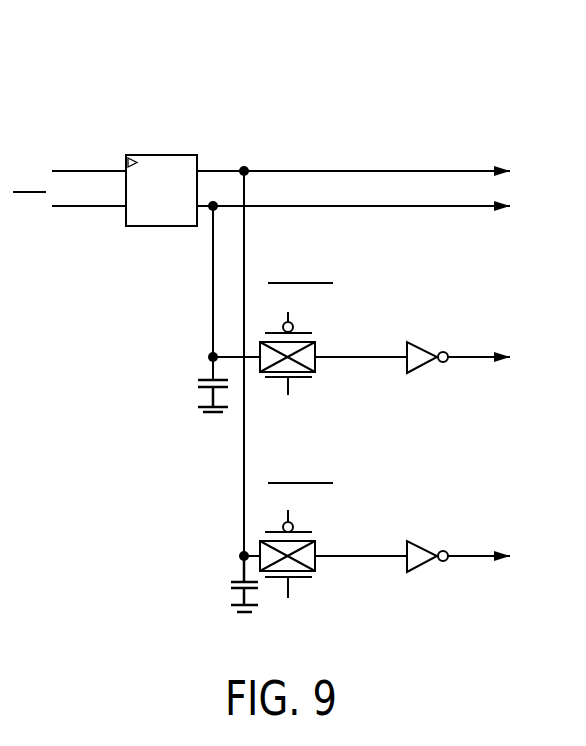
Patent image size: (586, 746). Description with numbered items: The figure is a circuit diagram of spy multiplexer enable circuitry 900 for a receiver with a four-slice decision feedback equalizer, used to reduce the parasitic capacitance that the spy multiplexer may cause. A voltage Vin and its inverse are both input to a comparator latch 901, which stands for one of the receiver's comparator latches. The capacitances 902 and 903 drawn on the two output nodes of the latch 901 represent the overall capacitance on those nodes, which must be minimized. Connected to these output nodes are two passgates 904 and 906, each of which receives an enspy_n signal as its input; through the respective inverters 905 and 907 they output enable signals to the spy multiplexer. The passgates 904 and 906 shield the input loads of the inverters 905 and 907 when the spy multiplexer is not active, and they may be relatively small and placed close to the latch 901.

The spy multiplexer enable circuitry 900 is at (526, 84).
The comparator latch 901 is at (157, 226).
The capacitance 902 is at (183, 365).
The capacitance 903 is at (220, 570).
The passgate 904 is at (317, 367).
The inverter 905 is at (417, 367).
The passgate 906 is at (318, 548).
The inverter 907 is at (417, 566).